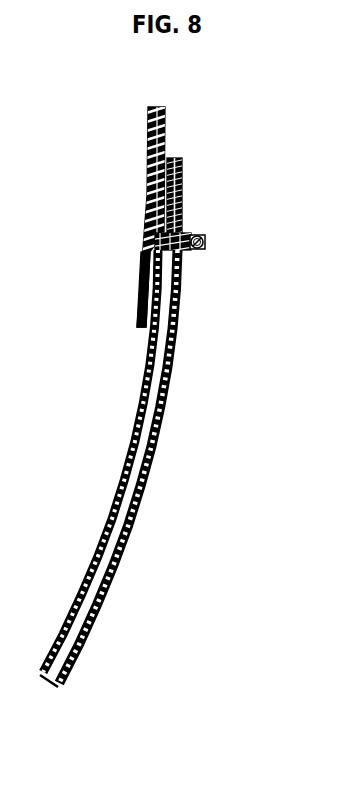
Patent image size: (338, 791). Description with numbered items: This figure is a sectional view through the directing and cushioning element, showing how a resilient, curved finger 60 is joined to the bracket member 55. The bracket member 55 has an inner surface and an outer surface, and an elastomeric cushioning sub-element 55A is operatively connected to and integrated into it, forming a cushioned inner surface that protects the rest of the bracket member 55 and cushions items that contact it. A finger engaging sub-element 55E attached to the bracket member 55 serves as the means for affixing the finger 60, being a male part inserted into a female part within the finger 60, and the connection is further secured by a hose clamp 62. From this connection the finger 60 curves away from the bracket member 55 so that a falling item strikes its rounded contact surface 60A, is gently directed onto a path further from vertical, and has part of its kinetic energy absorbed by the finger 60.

The bracket member 55 is at (148, 108).
The elastomeric cushioning sub-element 55A is at (148, 262).
The finger engaging sub-element 55E is at (182, 185).
The hose clamp 62 is at (206, 242).
The finger 60 is at (158, 390).
The contact surface 60A is at (117, 483).